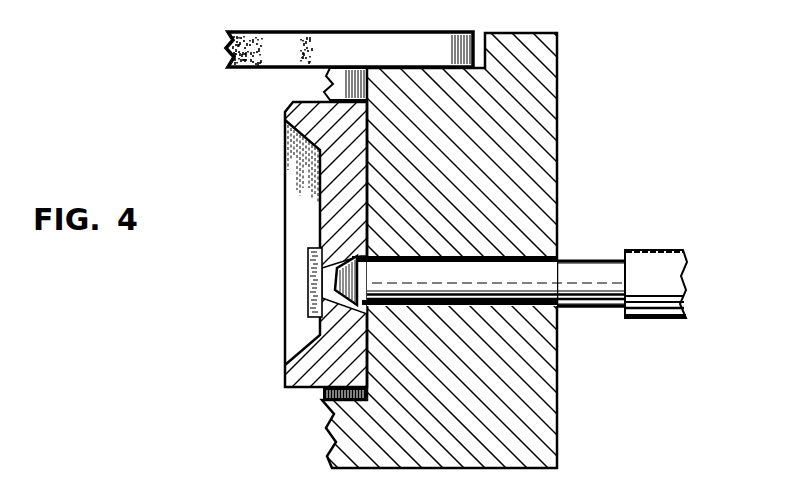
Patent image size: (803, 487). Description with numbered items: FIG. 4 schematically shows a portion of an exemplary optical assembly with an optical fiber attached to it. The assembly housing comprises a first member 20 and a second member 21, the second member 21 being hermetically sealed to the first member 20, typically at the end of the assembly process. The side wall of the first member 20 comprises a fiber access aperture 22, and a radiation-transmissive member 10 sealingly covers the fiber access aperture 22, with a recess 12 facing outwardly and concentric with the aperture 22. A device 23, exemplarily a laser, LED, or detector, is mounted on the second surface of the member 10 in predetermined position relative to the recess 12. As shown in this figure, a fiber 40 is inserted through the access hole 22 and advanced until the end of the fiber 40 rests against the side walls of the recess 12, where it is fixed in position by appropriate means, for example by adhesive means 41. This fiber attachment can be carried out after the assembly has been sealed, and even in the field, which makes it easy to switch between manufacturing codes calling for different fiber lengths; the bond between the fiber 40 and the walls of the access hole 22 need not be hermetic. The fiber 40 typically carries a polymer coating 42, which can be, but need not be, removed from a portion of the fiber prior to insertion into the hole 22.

The radiation-transmissive member 10 is at (297, 371).
The recess 12 is at (338, 262).
The first member 20 is at (522, 112).
The second member 21 is at (228, 43).
The fiber access aperture 22 is at (538, 312).
The device 23 is at (308, 276).
The fiber 40 is at (511, 285).
The adhesive means 41 is at (563, 258).
The polymer coating 42 is at (656, 318).